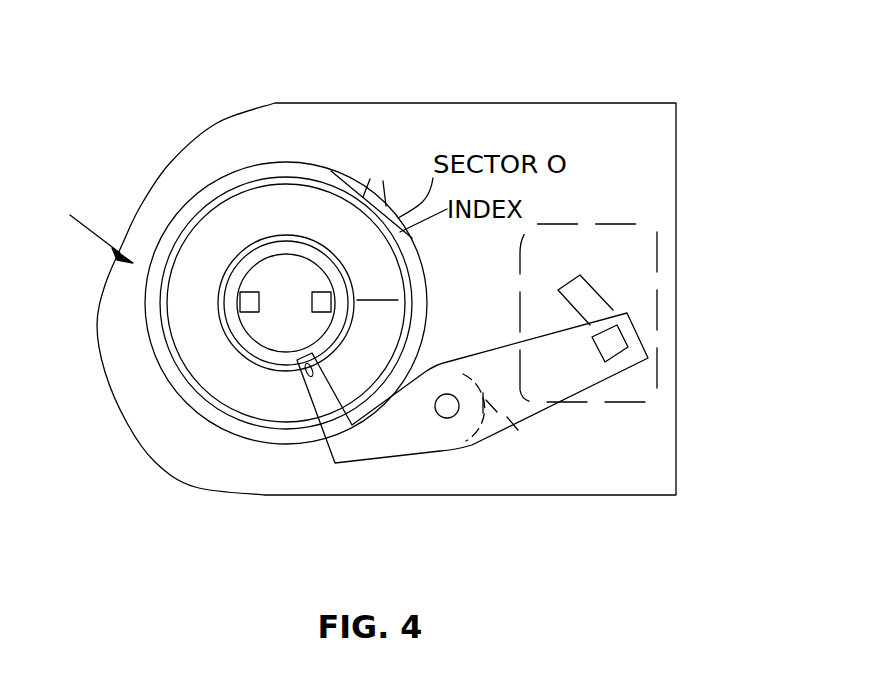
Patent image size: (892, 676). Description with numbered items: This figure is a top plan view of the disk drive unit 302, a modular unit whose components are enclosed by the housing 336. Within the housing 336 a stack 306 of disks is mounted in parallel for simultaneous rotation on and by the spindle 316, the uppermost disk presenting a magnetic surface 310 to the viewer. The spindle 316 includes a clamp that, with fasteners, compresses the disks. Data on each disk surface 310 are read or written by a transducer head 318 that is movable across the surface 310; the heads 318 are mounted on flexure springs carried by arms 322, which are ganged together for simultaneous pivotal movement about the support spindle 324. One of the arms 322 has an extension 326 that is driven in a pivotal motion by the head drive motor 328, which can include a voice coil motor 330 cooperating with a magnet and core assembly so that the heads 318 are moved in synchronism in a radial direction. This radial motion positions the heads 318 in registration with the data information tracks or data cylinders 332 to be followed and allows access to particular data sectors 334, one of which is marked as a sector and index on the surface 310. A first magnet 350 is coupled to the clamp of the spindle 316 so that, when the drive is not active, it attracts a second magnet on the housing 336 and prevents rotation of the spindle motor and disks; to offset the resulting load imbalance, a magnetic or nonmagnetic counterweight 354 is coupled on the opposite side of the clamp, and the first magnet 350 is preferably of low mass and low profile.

The disk drive unit 302 is at (667, 87).
The stack of disks 306 is at (93, 223).
The magnetic surface 310 is at (197, 205).
The spindle 316 is at (252, 328).
The transducer head 318 is at (302, 385).
The arm 322 is at (530, 437).
The support spindle 324 is at (450, 418).
The extension 326 is at (575, 378).
The head drive motor 328 is at (637, 253).
The voice coil motor 330 is at (618, 338).
The data information tracks 332 is at (277, 368).
The data sectors 334 is at (403, 175).
The housing 336 is at (552, 102).
The first magnet 350 is at (321, 292).
The counterweight 354 is at (250, 292).